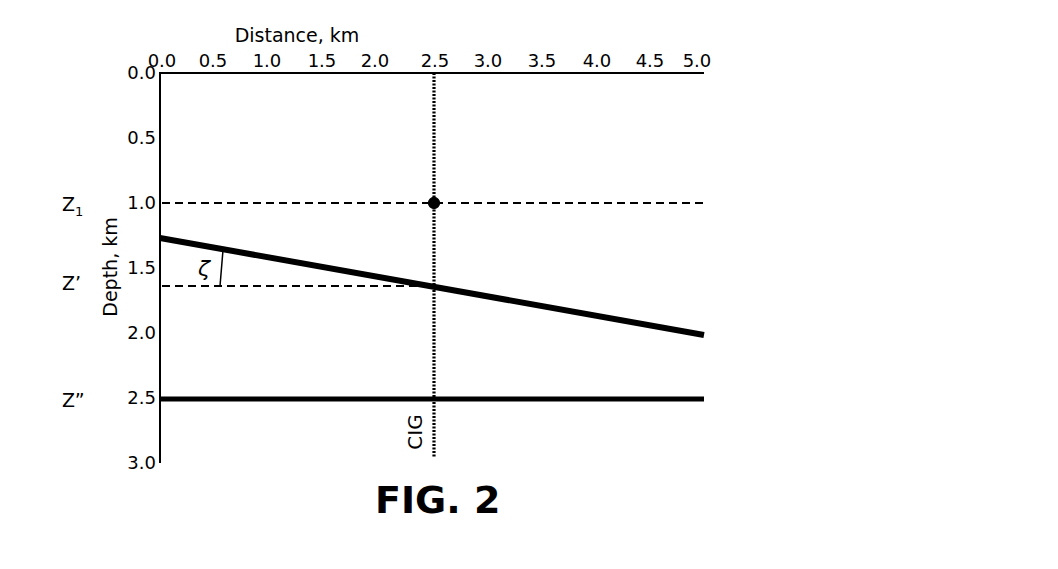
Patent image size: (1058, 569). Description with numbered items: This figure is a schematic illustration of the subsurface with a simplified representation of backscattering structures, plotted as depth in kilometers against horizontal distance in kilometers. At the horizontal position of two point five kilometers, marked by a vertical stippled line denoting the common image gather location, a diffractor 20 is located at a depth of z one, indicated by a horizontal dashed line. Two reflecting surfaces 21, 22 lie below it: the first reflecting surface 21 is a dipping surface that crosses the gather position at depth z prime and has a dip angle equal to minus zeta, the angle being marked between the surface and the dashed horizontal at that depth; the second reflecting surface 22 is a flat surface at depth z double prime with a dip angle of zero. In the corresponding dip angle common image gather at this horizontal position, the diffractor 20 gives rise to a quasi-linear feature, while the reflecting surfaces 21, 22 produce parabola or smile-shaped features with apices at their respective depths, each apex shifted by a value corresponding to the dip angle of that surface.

The diffractor 20 is at (434, 203).
The reflecting surface 21 is at (473, 293).
The reflecting surface 22 is at (462, 398).